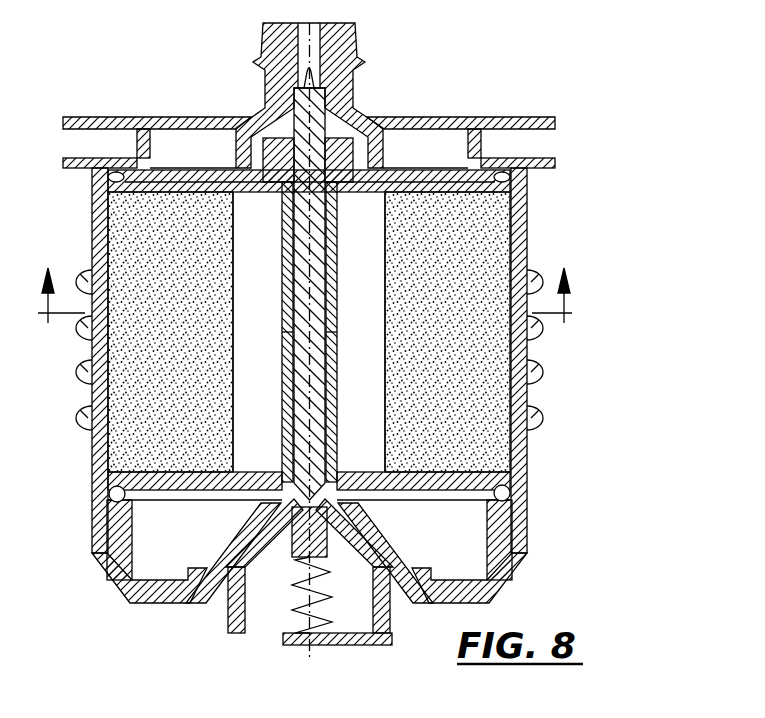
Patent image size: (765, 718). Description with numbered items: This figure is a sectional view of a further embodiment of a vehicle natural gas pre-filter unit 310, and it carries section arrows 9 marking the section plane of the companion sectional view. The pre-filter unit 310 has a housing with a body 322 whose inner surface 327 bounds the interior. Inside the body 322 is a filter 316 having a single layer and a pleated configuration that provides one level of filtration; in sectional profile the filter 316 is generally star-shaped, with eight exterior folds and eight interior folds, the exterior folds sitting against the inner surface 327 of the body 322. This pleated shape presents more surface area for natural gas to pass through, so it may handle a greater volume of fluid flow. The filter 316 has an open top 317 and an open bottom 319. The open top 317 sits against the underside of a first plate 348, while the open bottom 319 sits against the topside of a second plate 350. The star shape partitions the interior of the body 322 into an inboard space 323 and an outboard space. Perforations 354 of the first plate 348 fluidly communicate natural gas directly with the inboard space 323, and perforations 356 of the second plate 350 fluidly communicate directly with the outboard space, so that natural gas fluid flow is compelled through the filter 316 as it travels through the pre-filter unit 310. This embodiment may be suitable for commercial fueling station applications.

The pre-filter unit 310 is at (500, 92).
The filter 316 is at (486, 240).
The open top 317 is at (385, 193).
The open bottom 319 is at (236, 470).
The body 322 is at (519, 366).
The inboard space 323 is at (277, 328).
The inner surface 327 is at (497, 393).
The first plate 348 is at (198, 182).
The second plate 350 is at (205, 480).
The perforations 354 is at (376, 200).
The perforations 356 is at (455, 485).
The section line 9- 9 is at (307, 276).